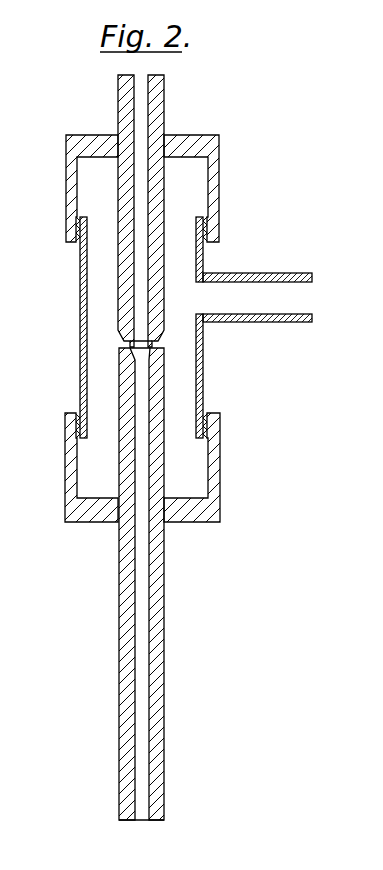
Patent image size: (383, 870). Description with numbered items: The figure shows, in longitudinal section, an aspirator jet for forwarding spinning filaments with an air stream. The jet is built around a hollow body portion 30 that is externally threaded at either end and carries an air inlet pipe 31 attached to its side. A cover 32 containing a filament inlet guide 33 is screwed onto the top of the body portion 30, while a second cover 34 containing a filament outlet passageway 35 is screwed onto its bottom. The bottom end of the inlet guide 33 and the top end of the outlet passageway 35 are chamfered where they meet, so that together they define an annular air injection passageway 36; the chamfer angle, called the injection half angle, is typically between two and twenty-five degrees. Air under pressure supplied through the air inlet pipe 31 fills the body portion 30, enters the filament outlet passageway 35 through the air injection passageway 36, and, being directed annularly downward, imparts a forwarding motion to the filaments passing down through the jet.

The hollow body portion 30 is at (80, 338).
The air inlet pipe 31 is at (263, 274).
The cover 32 is at (220, 195).
The filament inlet guide 33 is at (164, 108).
The second cover 34 is at (62, 466).
The filament outlet passageway 35 is at (164, 688).
The annular air injection passageway 36 is at (163, 337).